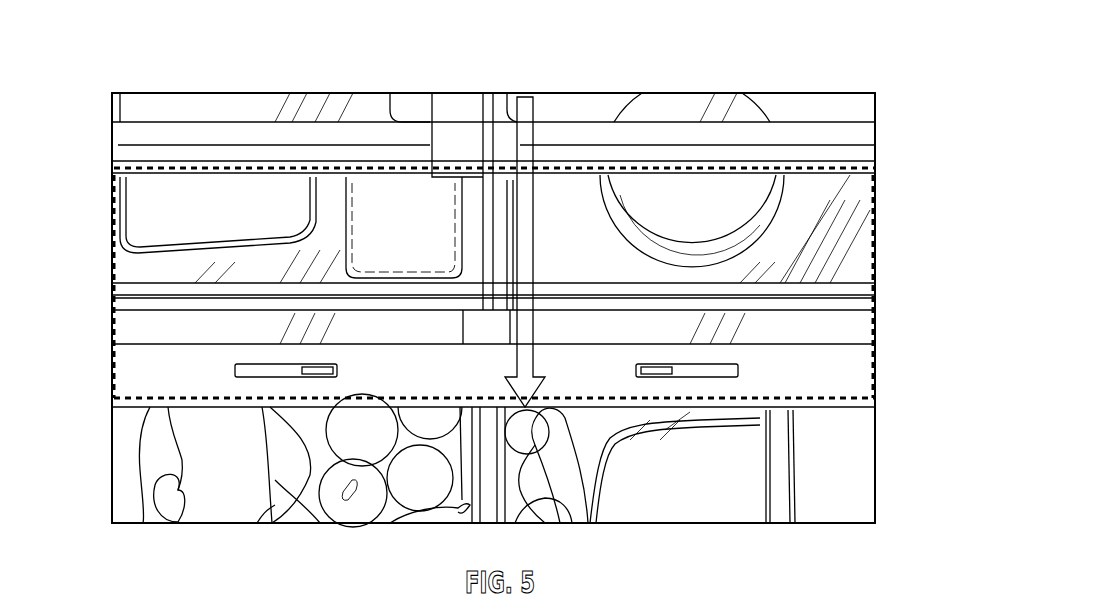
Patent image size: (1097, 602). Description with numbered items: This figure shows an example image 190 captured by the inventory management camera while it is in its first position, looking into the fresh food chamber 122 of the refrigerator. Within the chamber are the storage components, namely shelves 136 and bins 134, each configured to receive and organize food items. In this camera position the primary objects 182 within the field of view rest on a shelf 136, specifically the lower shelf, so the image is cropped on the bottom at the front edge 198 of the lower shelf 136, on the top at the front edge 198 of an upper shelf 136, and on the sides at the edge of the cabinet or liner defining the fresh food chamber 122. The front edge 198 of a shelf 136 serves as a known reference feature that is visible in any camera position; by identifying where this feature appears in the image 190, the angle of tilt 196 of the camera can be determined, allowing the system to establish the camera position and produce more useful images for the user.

The fresh food chamber 122 is at (817, 106).
The bin 134 is at (128, 489).
The shelf 136 is at (323, 132).
The object 182 is at (760, 217).
The image 190 is at (878, 114).
The angle of tilt 196 is at (538, 199).
The front edge 198 is at (767, 402).